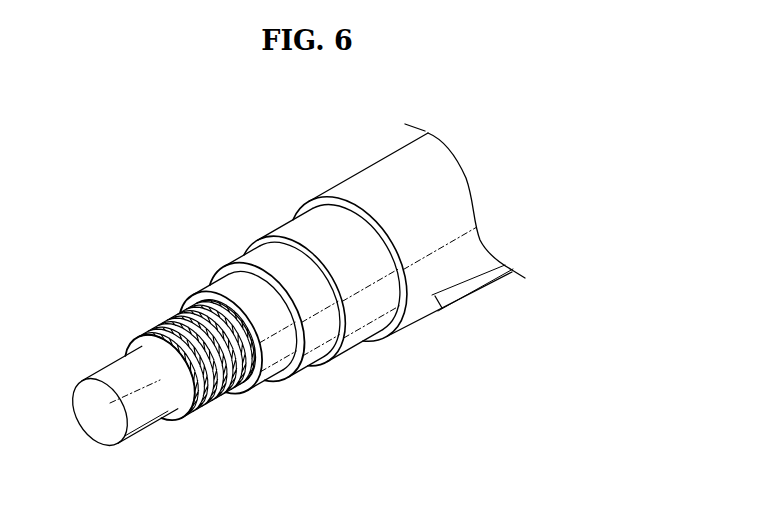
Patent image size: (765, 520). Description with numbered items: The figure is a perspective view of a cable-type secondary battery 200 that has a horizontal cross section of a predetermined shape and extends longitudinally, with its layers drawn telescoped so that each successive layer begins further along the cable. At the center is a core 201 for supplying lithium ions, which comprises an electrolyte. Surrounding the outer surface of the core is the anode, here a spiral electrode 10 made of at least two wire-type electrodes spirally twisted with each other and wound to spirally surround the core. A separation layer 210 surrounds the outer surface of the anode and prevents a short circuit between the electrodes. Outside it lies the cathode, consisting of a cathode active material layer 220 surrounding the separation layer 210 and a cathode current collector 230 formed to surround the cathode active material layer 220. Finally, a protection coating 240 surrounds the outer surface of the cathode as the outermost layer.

The cable-type secondary battery 200 is at (235, 194).
The core for supplying lithium ions 201 is at (138, 434).
The spiral electrode 10 is at (207, 391).
The separation layer 210 is at (268, 362).
The cathode active material layer 220 is at (328, 349).
The cathode current collector 230 is at (372, 338).
The protection coating 240 is at (437, 293).